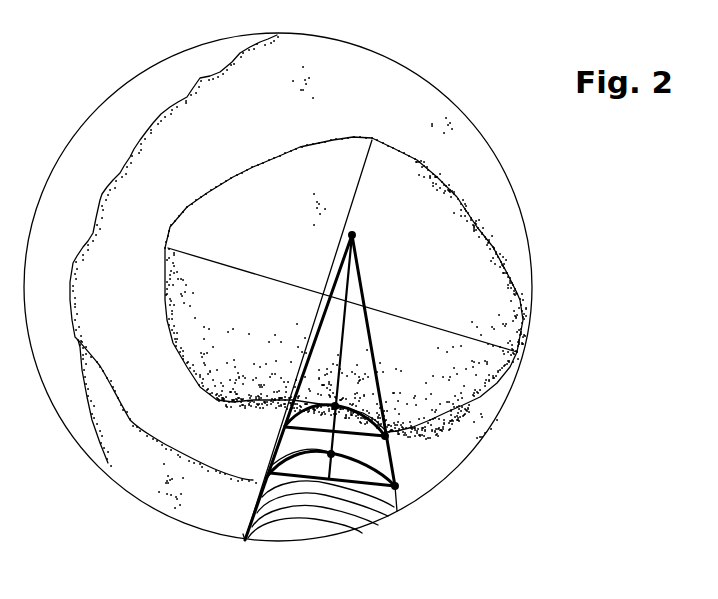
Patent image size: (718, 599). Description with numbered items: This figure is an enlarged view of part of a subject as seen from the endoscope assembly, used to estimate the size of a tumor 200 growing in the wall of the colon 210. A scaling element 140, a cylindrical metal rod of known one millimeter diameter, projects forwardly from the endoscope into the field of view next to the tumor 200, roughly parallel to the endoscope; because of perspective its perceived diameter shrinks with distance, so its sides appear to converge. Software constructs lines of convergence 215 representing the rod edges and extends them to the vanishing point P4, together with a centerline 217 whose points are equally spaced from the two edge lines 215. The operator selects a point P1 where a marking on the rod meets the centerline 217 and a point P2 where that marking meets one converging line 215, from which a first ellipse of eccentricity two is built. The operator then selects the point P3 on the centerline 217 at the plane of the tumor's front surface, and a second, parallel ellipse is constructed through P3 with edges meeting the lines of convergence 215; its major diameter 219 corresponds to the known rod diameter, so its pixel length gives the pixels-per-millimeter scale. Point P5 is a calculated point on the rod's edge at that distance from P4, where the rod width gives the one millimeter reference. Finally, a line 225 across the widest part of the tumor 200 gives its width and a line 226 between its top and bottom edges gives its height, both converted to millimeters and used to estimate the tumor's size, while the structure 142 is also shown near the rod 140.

The wall of the colon 210 is at (158, 105).
The tumor 200 is at (275, 217).
The line reflecting the height or minor diameter of the tumor 226 is at (350, 208).
The line reflecting the width or major diameter of the tumor 225 is at (192, 256).
The lines of convergence 215 is at (360, 267).
The centerline 217 is at (347, 283).
The major diameter of the second ellipse 219 is at (320, 426).
The point where the marking intersects the centerline P1 is at (282, 428).
The point where the marking intersects one of the converging lines P2 is at (395, 486).
The point along the centerline intersecting the plane of the front surface of the tu P3 is at (335, 406).
The vanishing point P4 is at (353, 230).
The point along the rod's edge P5 is at (385, 436).
The scaling element 140 is at (322, 523).
The lower structure 142 is at (256, 533).